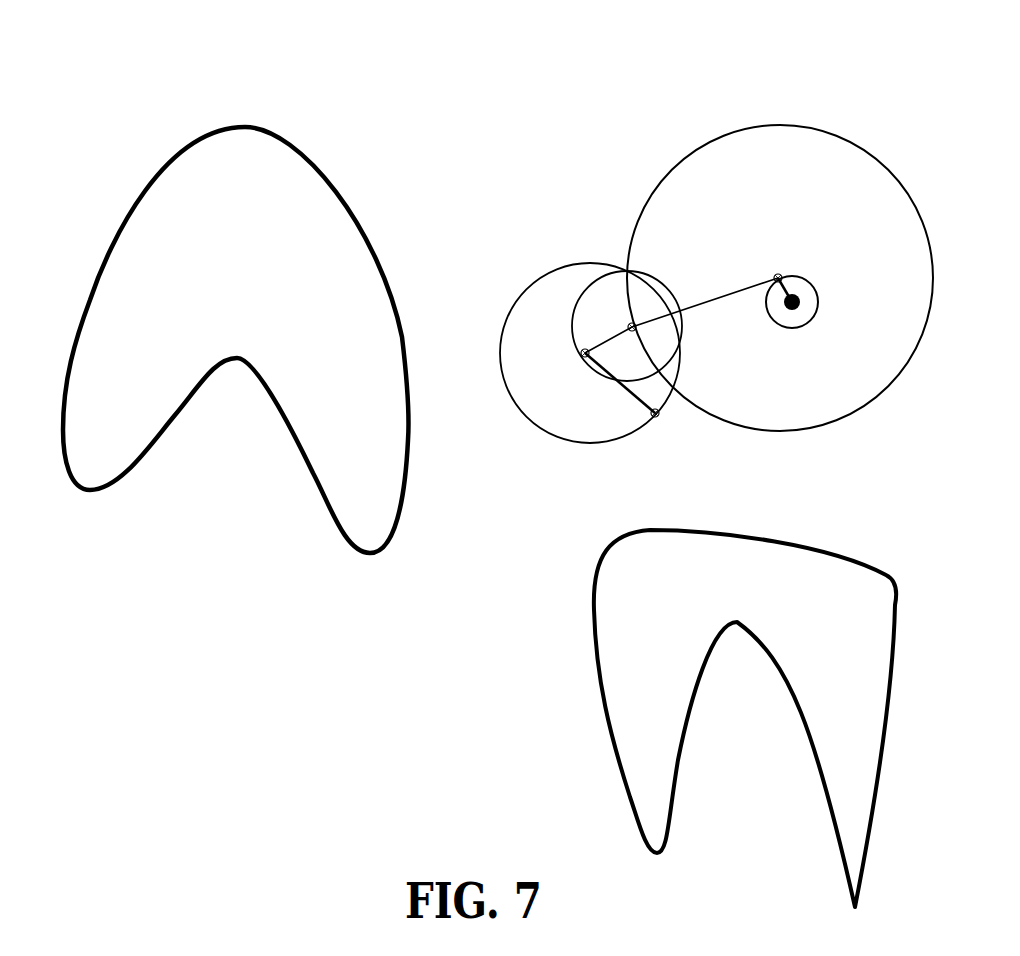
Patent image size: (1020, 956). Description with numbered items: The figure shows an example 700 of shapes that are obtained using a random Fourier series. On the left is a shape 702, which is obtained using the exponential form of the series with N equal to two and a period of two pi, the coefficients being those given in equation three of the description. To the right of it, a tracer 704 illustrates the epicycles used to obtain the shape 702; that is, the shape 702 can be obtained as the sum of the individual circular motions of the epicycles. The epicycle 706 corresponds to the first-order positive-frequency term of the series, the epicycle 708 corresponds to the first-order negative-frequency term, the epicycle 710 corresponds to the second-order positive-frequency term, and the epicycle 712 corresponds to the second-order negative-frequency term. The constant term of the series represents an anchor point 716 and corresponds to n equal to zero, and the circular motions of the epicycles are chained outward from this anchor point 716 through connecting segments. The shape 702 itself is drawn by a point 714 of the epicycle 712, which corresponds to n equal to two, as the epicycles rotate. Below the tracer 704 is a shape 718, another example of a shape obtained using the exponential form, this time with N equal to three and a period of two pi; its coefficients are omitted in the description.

The example 700 is at (120, 60).
The shape 702 is at (238, 122).
The tracer 704 is at (656, 109).
The epicycle 706 is at (783, 275).
The epicycle 708 is at (787, 123).
The epicycle 710 is at (657, 277).
The epicycle 712 is at (518, 293).
The point 714 is at (657, 420).
The anchor point 716 is at (791, 314).
The shape 718 is at (788, 540).